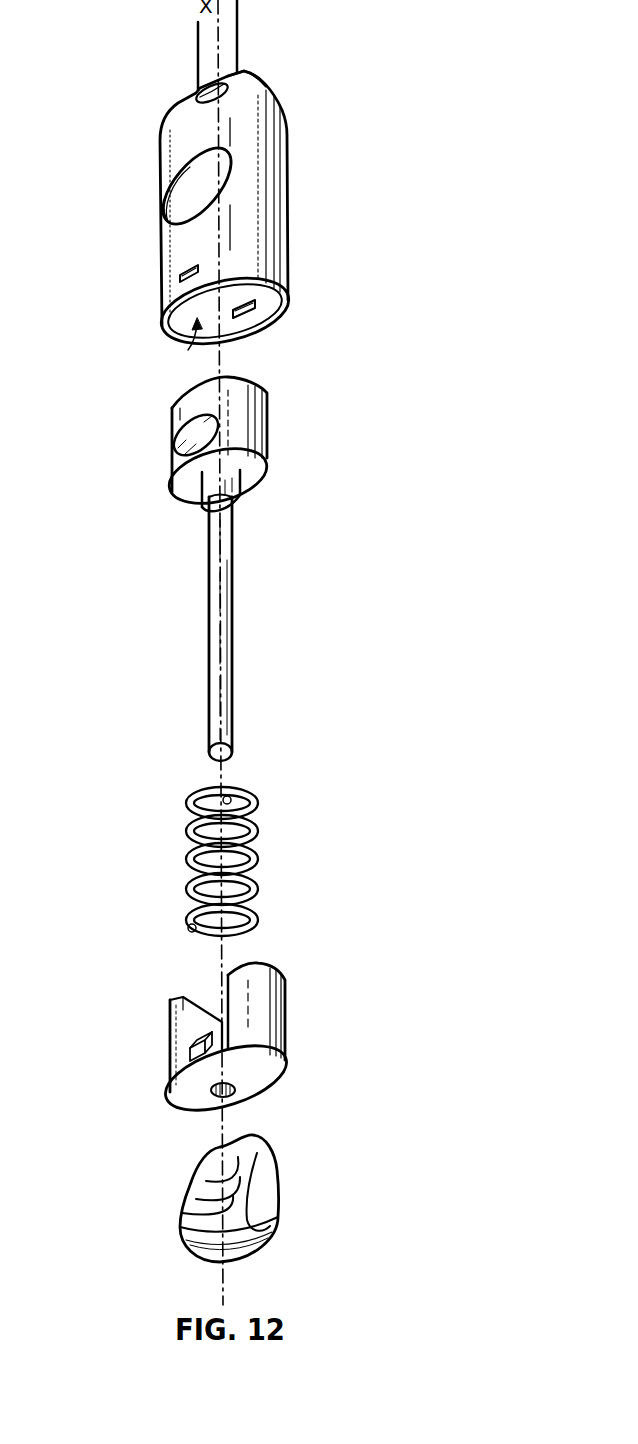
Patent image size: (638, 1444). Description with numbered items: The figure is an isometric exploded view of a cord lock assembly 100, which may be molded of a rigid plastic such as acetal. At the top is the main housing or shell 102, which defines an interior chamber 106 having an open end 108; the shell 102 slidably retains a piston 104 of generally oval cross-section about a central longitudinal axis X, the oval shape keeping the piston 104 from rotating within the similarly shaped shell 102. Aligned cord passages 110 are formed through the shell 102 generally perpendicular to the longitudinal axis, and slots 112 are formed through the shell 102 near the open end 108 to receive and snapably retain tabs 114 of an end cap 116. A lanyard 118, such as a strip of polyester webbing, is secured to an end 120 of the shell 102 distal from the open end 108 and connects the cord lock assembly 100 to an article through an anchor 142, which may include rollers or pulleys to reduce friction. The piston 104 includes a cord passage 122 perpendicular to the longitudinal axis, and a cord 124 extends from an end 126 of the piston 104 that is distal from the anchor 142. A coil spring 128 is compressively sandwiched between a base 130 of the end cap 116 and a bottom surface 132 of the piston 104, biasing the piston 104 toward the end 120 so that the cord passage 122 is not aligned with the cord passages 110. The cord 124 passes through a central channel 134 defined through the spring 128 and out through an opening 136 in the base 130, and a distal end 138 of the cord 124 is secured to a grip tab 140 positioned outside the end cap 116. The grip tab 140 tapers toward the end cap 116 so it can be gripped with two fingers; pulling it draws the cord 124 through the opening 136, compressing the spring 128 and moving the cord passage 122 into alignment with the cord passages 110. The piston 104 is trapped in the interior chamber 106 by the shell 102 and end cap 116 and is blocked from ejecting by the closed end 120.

The cord lock assembly 100 is at (92, 132).
The shell 102 is at (288, 193).
The piston 104 is at (292, 420).
The interior chamber 106 is at (188, 350).
The open end 108 is at (254, 340).
The cord passages 110 is at (162, 187).
The slots 112 is at (187, 272).
The tabs 114 is at (192, 1040).
The end cap 116 is at (287, 1040).
The lanyard 118 is at (228, 43).
The end 120 is at (253, 72).
The cord passage 122 is at (172, 438).
The cord 124 is at (210, 615).
The end 126 is at (192, 494).
The coil spring 128 is at (257, 873).
The base 130 is at (184, 1058).
The bottom surface 132 is at (252, 478).
The central channel 134 is at (228, 798).
The opening 136 is at (227, 1094).
The distal end 138 is at (218, 745).
The grip tab 140 is at (273, 1197).
The anchor 142 is at (197, 92).